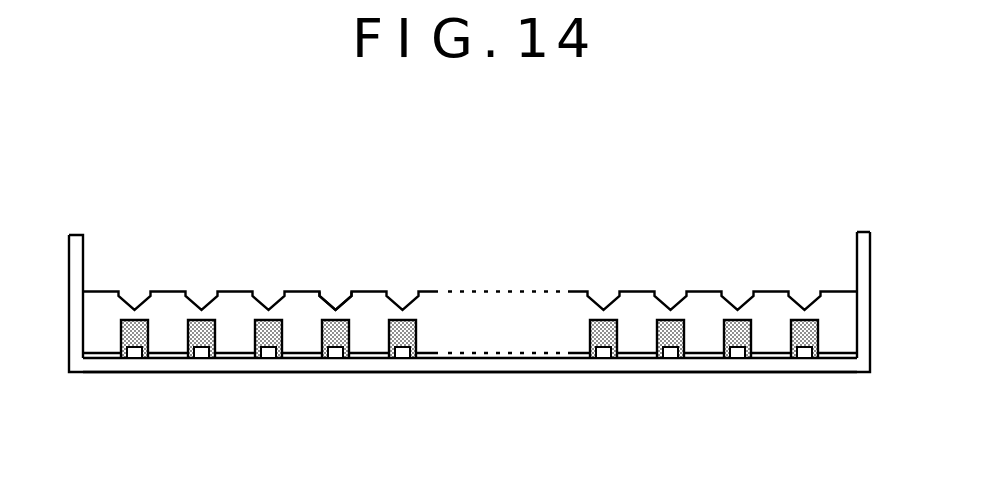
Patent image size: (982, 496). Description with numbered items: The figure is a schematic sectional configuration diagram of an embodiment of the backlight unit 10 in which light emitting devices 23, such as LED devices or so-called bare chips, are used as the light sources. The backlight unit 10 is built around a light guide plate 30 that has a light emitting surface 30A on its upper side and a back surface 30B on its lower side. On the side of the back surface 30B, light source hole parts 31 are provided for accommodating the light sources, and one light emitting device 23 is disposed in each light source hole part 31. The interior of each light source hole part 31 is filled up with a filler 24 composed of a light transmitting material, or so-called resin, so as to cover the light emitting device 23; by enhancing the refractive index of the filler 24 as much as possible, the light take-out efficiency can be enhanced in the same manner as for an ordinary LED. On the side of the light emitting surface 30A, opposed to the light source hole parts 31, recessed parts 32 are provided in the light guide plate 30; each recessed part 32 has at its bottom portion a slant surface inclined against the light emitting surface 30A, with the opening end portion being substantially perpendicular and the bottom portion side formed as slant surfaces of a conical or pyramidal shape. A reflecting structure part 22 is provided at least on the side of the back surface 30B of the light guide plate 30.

The backlight unit 10 is at (518, 155).
The reflecting structure part 22 is at (627, 362).
The light emitting device 23 is at (133, 359).
The filler 24 is at (268, 333).
The light guide plate 30 is at (470, 320).
The light emitting surface 30A is at (643, 280).
The back surface 30B is at (698, 353).
The light source hole part 31 is at (213, 335).
The recessed part 32 is at (333, 300).